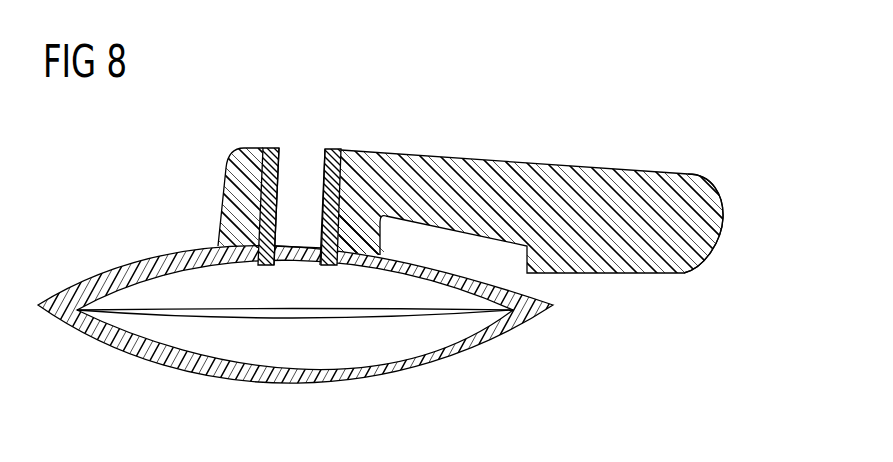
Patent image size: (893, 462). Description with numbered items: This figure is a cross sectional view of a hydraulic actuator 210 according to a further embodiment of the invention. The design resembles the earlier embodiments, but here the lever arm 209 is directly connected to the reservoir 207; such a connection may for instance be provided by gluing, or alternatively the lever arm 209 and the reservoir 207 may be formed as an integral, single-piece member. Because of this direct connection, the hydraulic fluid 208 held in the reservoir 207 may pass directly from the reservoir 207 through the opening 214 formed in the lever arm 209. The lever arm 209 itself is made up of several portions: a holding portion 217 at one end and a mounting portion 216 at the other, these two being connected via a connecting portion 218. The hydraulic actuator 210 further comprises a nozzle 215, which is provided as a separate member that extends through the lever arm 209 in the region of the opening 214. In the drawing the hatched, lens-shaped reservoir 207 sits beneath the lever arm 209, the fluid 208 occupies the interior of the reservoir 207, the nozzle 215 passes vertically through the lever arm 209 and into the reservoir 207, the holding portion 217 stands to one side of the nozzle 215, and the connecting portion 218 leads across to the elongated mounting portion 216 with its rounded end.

The hydraulic actuator 210 is at (118, 147).
The reservoir 207 is at (470, 337).
The hydraulic fluid 208 is at (388, 342).
The lever arm 209 is at (530, 150).
The opening 214 is at (305, 163).
The nozzle 215 is at (337, 153).
The mounting portion 216 is at (716, 222).
The holding portion 217 is at (237, 202).
The connecting portion 218 is at (413, 160).